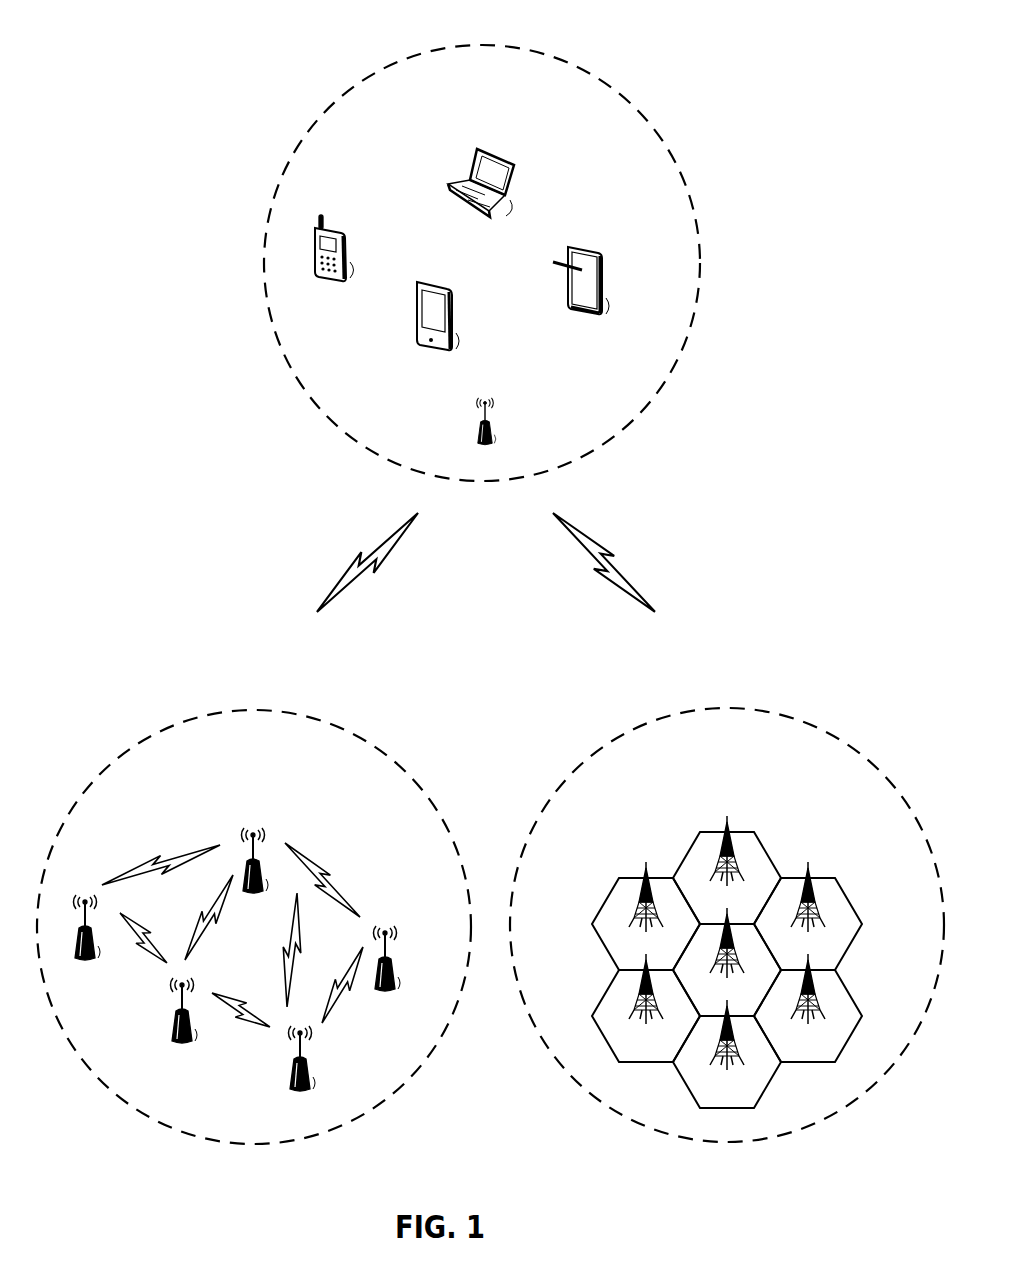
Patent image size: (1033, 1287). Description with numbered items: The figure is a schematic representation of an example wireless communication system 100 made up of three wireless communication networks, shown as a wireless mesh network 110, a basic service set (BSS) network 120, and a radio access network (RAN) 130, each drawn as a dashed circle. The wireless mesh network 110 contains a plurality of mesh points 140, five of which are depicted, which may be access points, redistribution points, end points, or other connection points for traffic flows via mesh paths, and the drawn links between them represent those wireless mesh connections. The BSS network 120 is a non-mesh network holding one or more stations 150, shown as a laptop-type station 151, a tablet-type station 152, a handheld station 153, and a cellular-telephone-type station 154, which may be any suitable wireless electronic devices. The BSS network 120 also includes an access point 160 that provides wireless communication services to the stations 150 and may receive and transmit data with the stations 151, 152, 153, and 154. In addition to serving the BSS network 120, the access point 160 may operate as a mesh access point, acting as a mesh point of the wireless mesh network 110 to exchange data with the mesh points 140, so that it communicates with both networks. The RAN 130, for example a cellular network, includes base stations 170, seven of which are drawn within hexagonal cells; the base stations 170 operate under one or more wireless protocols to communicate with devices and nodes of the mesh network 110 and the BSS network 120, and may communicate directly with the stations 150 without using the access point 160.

The wireless communication system 100 is at (126, 45).
The wireless mesh network 110 is at (243, 709).
The basic service set (BSS) network 120 is at (482, 44).
The radio access network (RAN) 130 is at (718, 708).
The mesh points (MPs) 140 is at (248, 791).
The stations 150 is at (445, 123).
The station 151 is at (480, 150).
The station 152 is at (580, 248).
The station 153 is at (421, 283).
The station 154 is at (340, 228).
The access point (AP) 160 is at (497, 428).
The base stations 170 is at (722, 789).